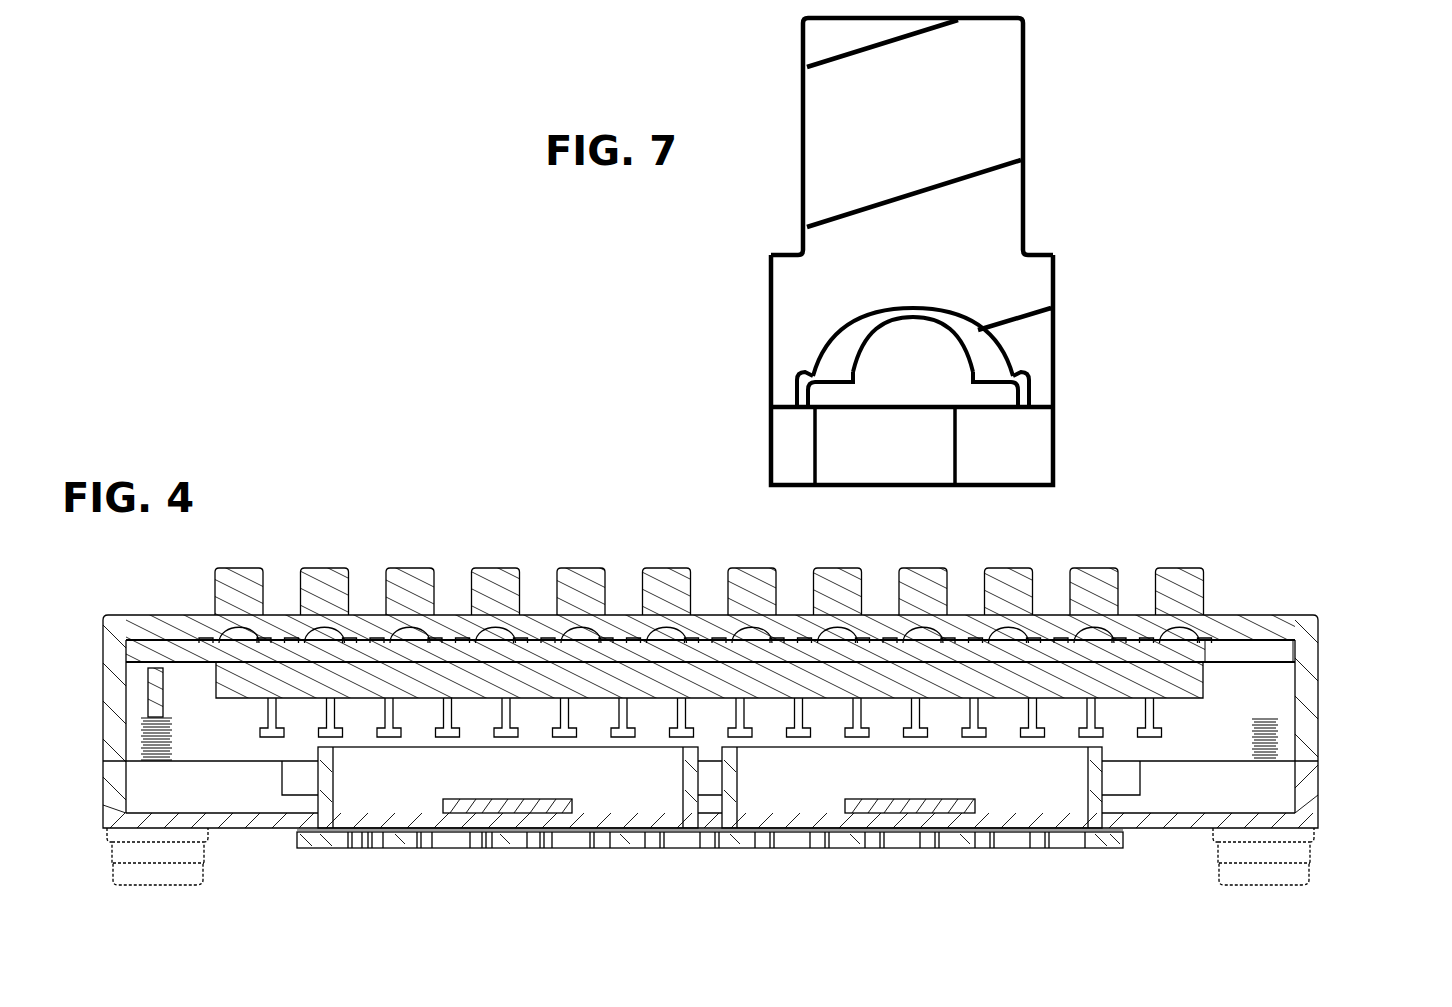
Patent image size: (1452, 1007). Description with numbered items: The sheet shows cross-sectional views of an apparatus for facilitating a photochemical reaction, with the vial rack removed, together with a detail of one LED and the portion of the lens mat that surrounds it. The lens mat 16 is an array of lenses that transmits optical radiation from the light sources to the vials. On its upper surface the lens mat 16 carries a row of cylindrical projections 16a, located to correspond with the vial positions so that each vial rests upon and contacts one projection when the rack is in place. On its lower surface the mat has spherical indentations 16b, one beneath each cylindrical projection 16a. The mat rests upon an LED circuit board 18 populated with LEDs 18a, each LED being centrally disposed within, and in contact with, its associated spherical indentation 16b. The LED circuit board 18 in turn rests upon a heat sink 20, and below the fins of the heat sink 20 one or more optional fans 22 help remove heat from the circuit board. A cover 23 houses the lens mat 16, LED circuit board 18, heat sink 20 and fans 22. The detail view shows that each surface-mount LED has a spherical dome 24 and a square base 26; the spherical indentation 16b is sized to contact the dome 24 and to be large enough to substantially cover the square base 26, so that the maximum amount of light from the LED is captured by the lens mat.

In FIG. 4, the lens mat 16 is at (726, 585).
In FIG. 4, the cylindrical projections 16a is at (582, 567).
In FIG. 7, the cylindrical projections 16a is at (942, 130).
In FIG. 4, the spherical indentations 16b is at (1075, 667).
In FIG. 7, the spherical indentations 16b is at (993, 352).
In FIG. 4, the LED circuit board 18 is at (238, 648).
In FIG. 7, the LED circuit board 18 is at (1035, 447).
In FIG. 4, the LEDs 18a is at (593, 632).
In FIG. 7, the LEDs 18a is at (942, 379).
In FIG. 4, the heat sink 20 is at (985, 694).
In FIG. 4, the fans 22 is at (395, 792).
In FIG. 4, the cover 23 is at (1320, 730).
In FIG. 7, the spherical dome 24 is at (848, 368).
In FIG. 7, the square base 26 is at (822, 394).